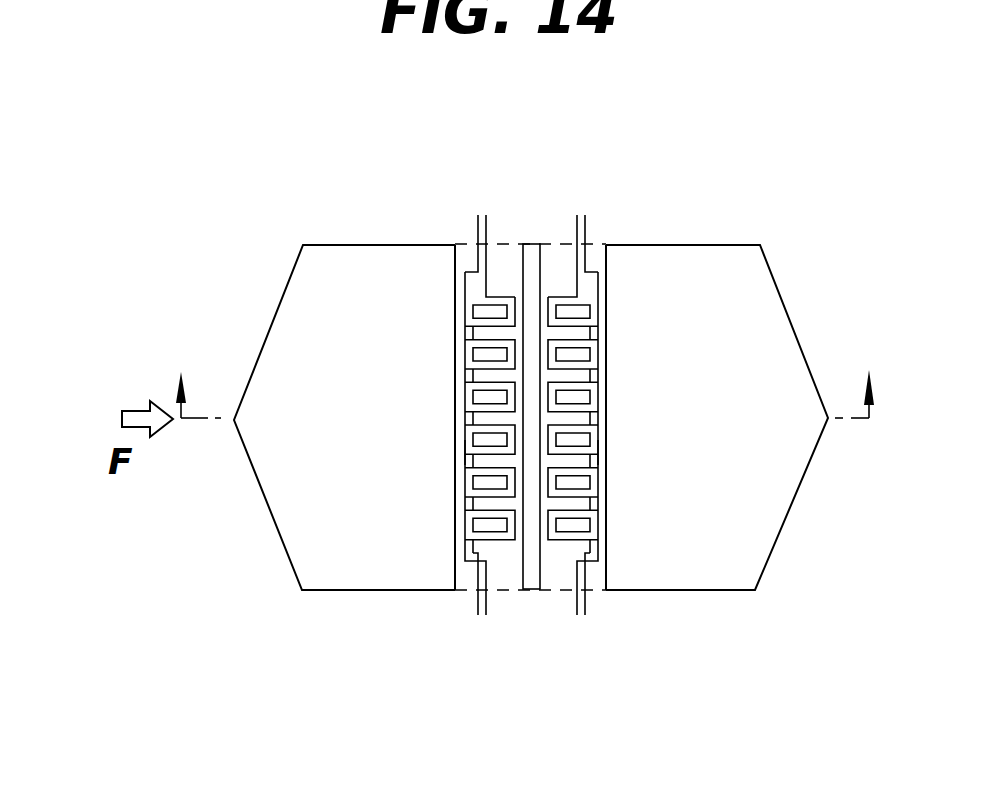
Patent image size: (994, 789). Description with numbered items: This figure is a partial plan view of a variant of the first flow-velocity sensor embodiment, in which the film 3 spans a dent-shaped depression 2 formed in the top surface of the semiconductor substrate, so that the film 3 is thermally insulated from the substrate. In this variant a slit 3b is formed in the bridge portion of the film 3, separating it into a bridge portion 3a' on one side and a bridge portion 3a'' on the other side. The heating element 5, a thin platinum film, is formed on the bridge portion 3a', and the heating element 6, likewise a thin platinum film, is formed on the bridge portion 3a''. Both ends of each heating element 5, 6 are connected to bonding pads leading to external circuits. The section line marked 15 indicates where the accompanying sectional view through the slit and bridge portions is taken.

The depression 2 is at (777, 323).
The film 3 is at (540, 387).
The bridge portion 3a' is at (448, 232).
The bridge portion 3a'' is at (630, 228).
The slit 3b is at (531, 557).
The heating element 5 is at (468, 452).
The heating element 6 is at (590, 457).
The section line XV-XV 15 is at (531, 364).